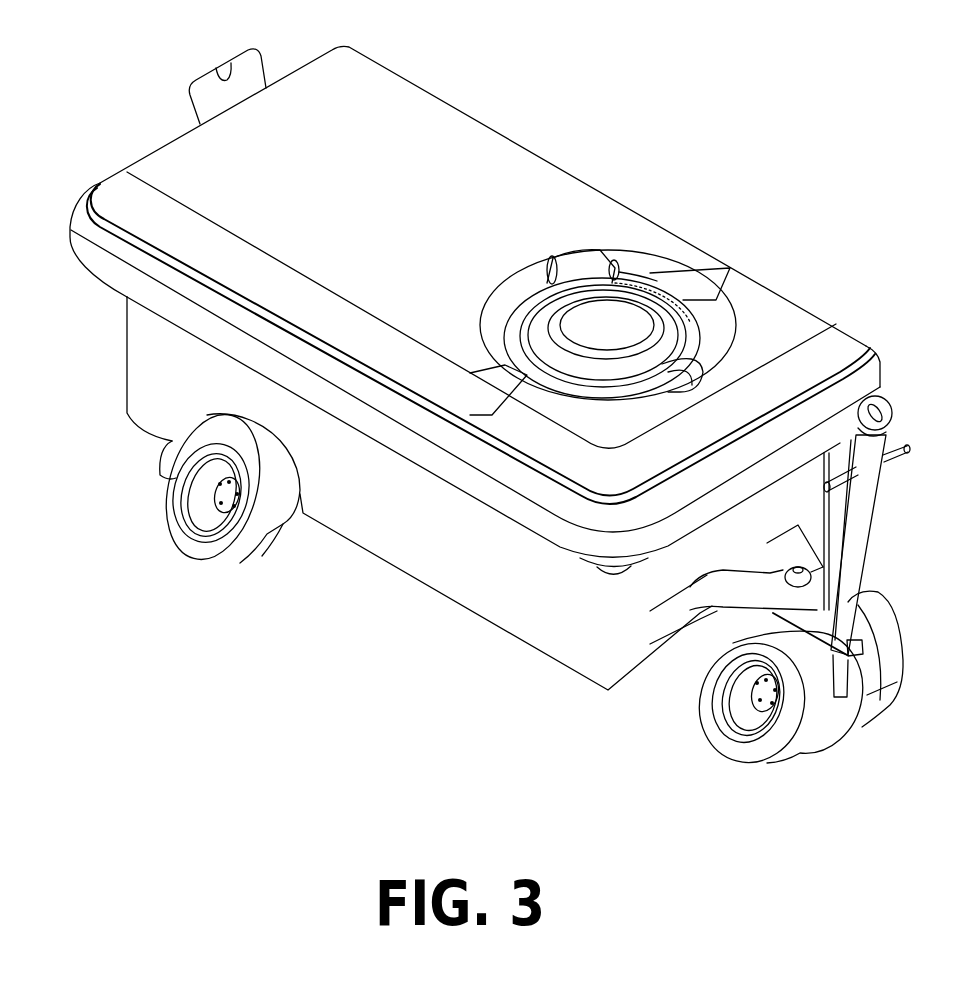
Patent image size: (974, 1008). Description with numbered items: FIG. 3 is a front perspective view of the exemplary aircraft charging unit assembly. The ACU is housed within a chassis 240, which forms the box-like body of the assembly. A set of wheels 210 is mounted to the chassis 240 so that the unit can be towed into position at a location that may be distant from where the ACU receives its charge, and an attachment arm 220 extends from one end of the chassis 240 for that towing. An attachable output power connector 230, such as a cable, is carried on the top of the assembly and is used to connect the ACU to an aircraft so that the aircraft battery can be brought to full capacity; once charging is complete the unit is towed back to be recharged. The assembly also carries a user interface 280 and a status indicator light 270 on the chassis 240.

The wheel 210 is at (218, 552).
The handle 220 is at (868, 552).
The hose 230 is at (662, 262).
The container body 240 is at (528, 638).
The eyelet 270 is at (871, 347).
The strap tab 280 is at (254, 78).